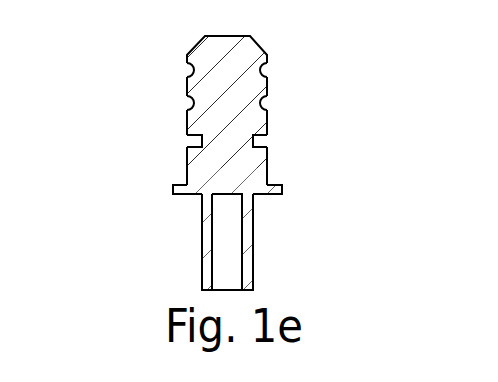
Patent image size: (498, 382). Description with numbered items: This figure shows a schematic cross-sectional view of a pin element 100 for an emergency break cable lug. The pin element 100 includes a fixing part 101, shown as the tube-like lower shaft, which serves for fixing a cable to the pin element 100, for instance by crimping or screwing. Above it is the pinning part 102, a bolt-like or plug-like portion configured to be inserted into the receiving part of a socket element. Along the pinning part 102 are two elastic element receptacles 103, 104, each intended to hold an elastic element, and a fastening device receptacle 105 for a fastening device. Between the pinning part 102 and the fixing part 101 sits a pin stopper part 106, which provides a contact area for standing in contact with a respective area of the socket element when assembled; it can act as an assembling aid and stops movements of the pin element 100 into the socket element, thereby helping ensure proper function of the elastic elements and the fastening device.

The pin element 100 is at (288, 70).
The fixing part 101 is at (258, 258).
The pinning part 102 is at (317, 162).
The elastic element receptacle 103 is at (183, 68).
The elastic element receptacle 104 is at (182, 104).
The fastening device receptacle 105 is at (260, 143).
The pin stopper part 106 is at (283, 189).